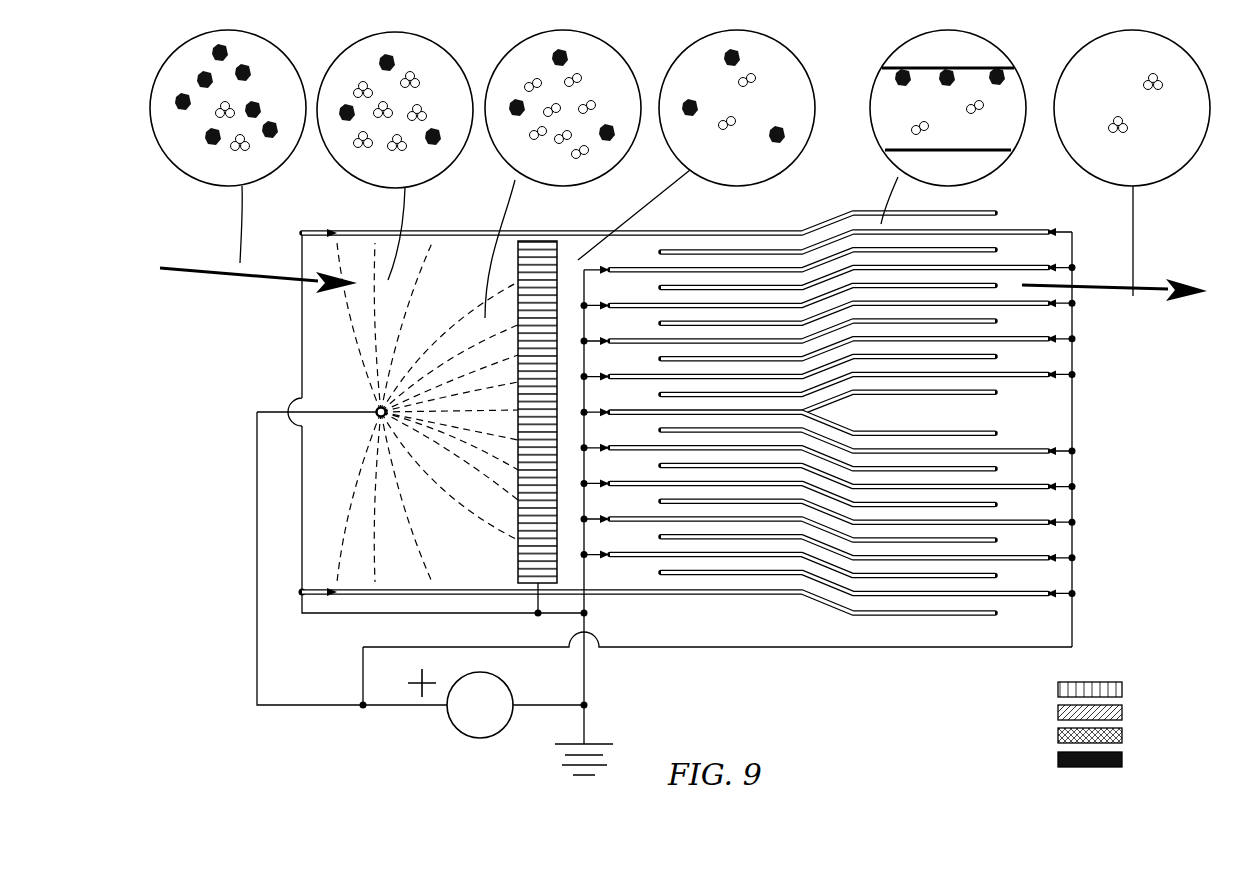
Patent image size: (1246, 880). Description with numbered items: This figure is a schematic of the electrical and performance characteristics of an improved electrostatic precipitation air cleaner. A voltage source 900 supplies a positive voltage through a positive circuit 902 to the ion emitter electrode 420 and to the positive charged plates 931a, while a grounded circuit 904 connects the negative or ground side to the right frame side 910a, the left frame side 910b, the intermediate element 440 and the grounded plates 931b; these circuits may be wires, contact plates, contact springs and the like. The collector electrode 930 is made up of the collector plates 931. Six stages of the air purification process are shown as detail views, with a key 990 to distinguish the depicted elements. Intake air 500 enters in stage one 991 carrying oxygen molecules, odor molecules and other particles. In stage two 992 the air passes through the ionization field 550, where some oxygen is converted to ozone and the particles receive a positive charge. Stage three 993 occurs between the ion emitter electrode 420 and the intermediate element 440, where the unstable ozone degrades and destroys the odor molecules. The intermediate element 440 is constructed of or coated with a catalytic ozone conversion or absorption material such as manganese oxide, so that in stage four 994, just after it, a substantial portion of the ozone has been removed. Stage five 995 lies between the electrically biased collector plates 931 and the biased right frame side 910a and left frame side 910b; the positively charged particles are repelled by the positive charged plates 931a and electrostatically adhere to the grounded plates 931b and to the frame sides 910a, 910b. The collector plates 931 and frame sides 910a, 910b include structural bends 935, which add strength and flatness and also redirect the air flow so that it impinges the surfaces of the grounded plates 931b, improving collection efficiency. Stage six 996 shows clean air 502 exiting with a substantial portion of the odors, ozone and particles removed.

The ion emitter electrode 420 is at (378, 408).
The intermediate element 440 is at (518, 562).
The intake air 500 is at (280, 286).
The clean air 502 is at (1103, 290).
The ionization field 550 is at (350, 493).
The voltage source 900 is at (468, 735).
The positive circuit 902 is at (257, 650).
The grounded circuit 904 is at (585, 673).
The right frame side 910a is at (664, 213).
The left frame side 910b is at (757, 595).
The collector electrode 930 is at (892, 437).
The collector plates 931 is at (906, 414).
The positive charged plates 931a is at (1020, 378).
The grounded plates 931b is at (877, 414).
The structural bends 935 is at (826, 606).
The key 990 is at (1058, 672).
The stage one 991 is at (224, 187).
The stage two 992 is at (357, 187).
The stage three 993 is at (540, 187).
The stage four 994 is at (787, 168).
The stage five 995 is at (1003, 163).
The stage six 996 is at (1150, 187).